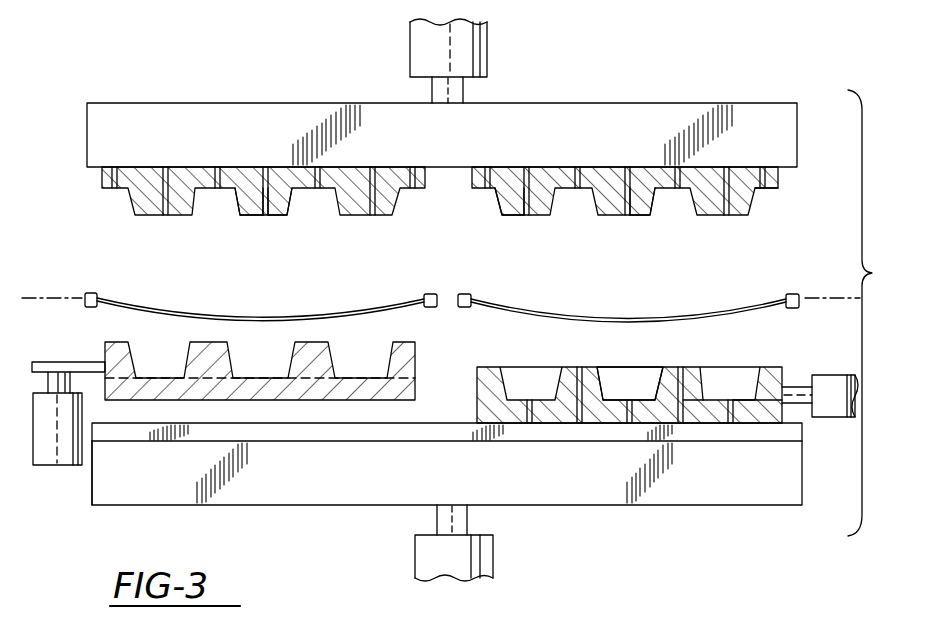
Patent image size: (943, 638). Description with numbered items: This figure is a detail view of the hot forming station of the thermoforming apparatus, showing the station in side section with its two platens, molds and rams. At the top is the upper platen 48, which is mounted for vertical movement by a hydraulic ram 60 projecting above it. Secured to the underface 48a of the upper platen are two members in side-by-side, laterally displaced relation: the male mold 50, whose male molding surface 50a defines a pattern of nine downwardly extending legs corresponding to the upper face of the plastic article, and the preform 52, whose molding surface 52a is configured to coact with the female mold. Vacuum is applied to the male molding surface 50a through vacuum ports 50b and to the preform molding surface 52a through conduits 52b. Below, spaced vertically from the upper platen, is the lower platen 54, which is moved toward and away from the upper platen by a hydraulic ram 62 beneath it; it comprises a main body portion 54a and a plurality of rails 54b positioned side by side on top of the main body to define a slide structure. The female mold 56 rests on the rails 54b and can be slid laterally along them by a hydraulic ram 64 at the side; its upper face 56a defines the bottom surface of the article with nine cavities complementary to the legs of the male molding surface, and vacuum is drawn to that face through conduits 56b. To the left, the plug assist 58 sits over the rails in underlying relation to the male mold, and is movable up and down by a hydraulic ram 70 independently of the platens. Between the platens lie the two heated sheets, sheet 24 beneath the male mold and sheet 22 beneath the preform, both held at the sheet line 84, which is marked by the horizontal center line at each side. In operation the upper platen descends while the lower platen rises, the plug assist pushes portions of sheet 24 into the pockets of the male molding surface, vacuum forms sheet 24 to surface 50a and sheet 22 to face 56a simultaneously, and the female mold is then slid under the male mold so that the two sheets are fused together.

The sheet 22 is at (720, 320).
The sheet 24 is at (350, 307).
The upper platen 48 is at (760, 103).
The underface of upper platen 48a is at (790, 172).
The male mold 50 is at (423, 178).
The male molding surface 50a is at (233, 217).
The vacuum ports 50b is at (267, 183).
The preform 52 is at (474, 182).
The molding surface of preform 52a is at (512, 216).
The conduits 52b is at (634, 182).
The lower platen 54 is at (812, 486).
The main body portion 54a is at (447, 480).
The rails 54b is at (305, 435).
The female mold 56 is at (629, 395).
The upper face of female mold 56a is at (656, 378).
The conduits 56b is at (705, 420).
The plug assist 58 is at (415, 378).
The hydraulic ram 60 is at (481, 50).
The hydraulic ram 62 is at (480, 565).
The hydraulic ram 64 is at (831, 375).
The hydraulic ram 70 is at (60, 449).
The sheet line 84 is at (70, 297).